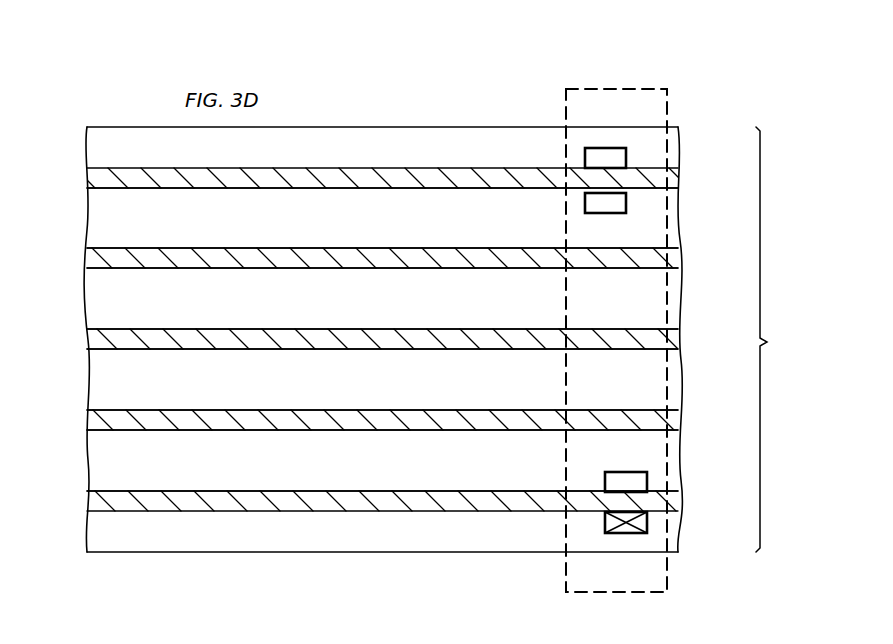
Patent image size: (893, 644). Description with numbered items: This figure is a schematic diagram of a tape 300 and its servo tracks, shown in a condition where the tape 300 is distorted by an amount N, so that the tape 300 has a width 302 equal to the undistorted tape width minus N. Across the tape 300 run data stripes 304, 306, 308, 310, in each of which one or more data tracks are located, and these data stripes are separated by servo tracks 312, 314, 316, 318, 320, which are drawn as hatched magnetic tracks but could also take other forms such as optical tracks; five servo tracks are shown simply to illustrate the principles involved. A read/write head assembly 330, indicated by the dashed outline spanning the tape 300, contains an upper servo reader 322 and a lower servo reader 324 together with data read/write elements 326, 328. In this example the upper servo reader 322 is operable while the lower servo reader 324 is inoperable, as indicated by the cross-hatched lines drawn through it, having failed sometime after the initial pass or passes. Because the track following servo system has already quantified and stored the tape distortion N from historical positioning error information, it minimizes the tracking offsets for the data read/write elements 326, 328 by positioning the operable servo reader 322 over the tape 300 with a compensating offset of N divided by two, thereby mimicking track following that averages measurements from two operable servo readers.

The tape 300 is at (447, 102).
The width 302 is at (785, 339).
The data stripe 304 is at (683, 220).
The data stripe 306 is at (683, 291).
The data stripe 308 is at (683, 386).
The data stripe 310 is at (683, 460).
The servo track 312 is at (87, 178).
The servo track 314 is at (87, 256).
The servo track 316 is at (87, 338).
The servo track 318 is at (87, 419).
The servo track 320 is at (87, 499).
The upper servo reader 322 is at (585, 155).
The lower servo reader 324 is at (605, 525).
The data read/write element 326 is at (585, 203).
The data read/write element 328 is at (605, 478).
The read/write head assembly 330 is at (626, 87).